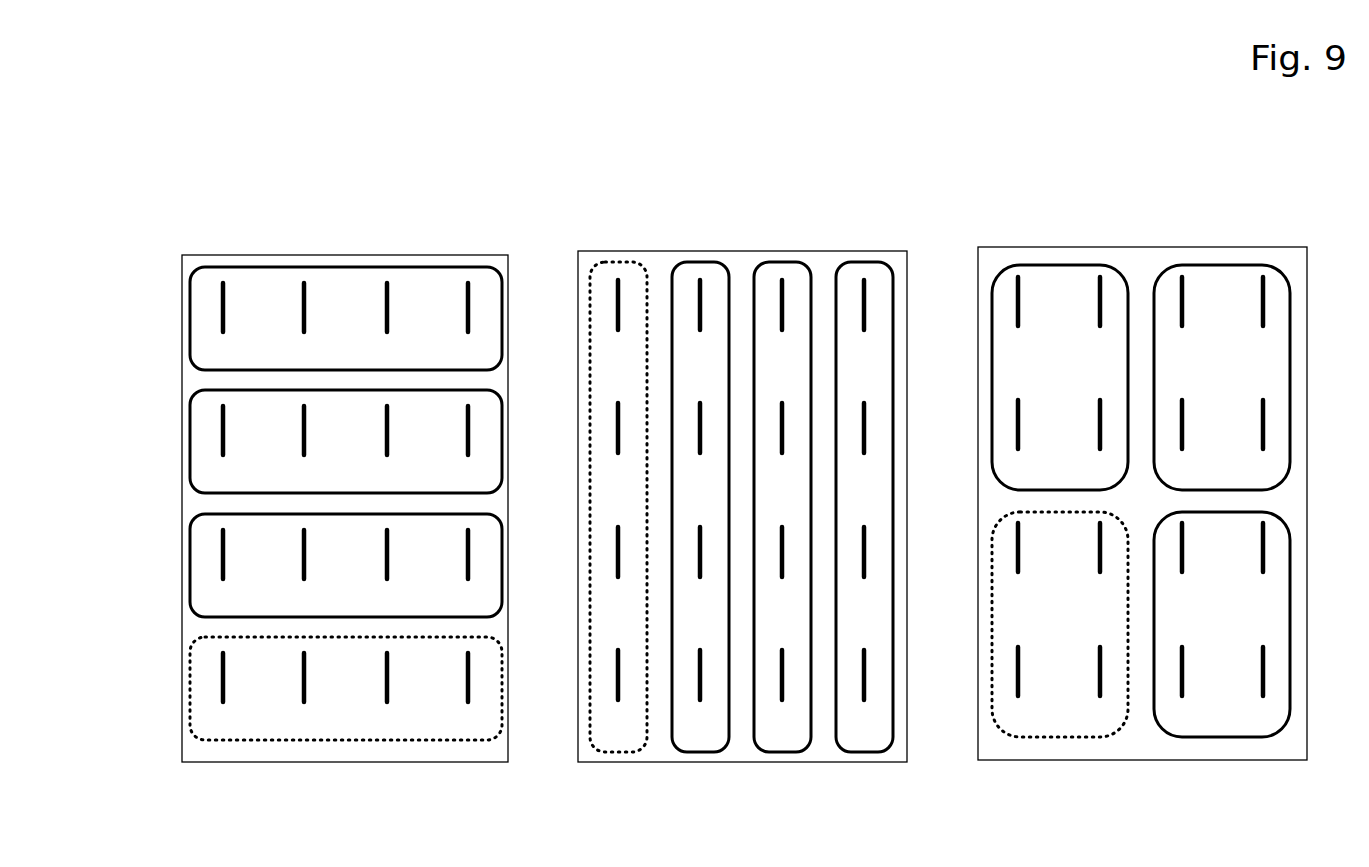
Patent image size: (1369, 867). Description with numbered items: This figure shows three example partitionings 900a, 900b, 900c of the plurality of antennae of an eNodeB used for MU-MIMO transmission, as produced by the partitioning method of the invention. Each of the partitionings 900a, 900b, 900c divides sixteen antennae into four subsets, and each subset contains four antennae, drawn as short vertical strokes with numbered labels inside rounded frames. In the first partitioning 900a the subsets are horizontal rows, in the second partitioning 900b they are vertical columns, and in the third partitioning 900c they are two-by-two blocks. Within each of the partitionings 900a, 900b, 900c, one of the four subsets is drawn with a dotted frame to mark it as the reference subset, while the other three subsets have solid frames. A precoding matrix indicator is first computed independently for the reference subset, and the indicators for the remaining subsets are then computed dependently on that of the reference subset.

The partitioning 900a is at (233, 226).
The partitioning 900b is at (630, 221).
The partitioning 900c is at (1245, 216).